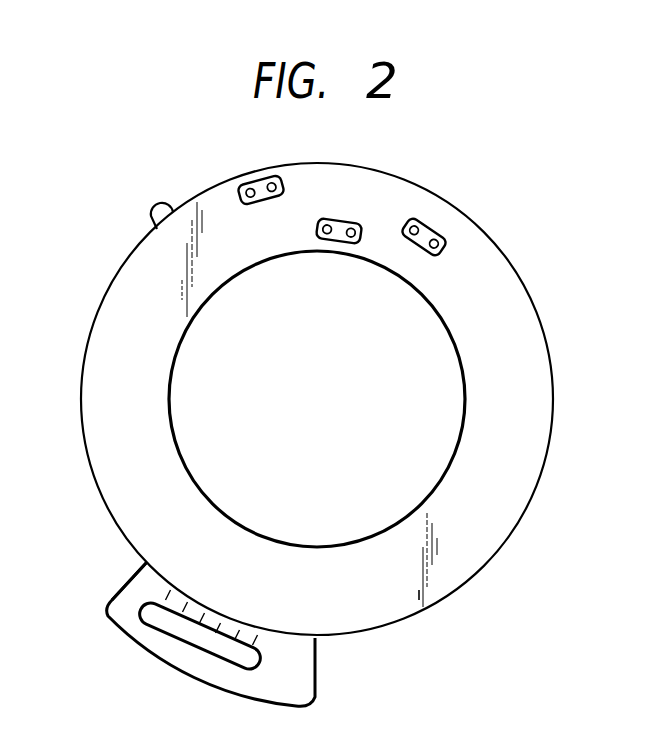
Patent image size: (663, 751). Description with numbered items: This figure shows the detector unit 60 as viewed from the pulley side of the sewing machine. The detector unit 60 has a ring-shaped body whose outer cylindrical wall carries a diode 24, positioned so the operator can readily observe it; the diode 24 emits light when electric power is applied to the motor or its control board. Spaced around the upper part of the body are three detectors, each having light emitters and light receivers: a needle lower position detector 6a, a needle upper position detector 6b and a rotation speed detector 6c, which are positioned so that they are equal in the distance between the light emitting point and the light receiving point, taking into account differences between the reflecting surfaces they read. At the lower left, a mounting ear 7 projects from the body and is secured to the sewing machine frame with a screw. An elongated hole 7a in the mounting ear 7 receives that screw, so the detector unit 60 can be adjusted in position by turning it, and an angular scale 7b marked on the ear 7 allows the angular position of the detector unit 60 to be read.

The detector unit 60 is at (110, 362).
The diode 24 is at (162, 207).
The needle lower position detector 6a is at (342, 227).
The needle upper position detector 6b is at (428, 232).
The rotation speed detector 6c is at (263, 183).
The mounting ear 7 is at (303, 681).
The elongated hole 7a is at (210, 654).
The angular scale 7b is at (142, 565).